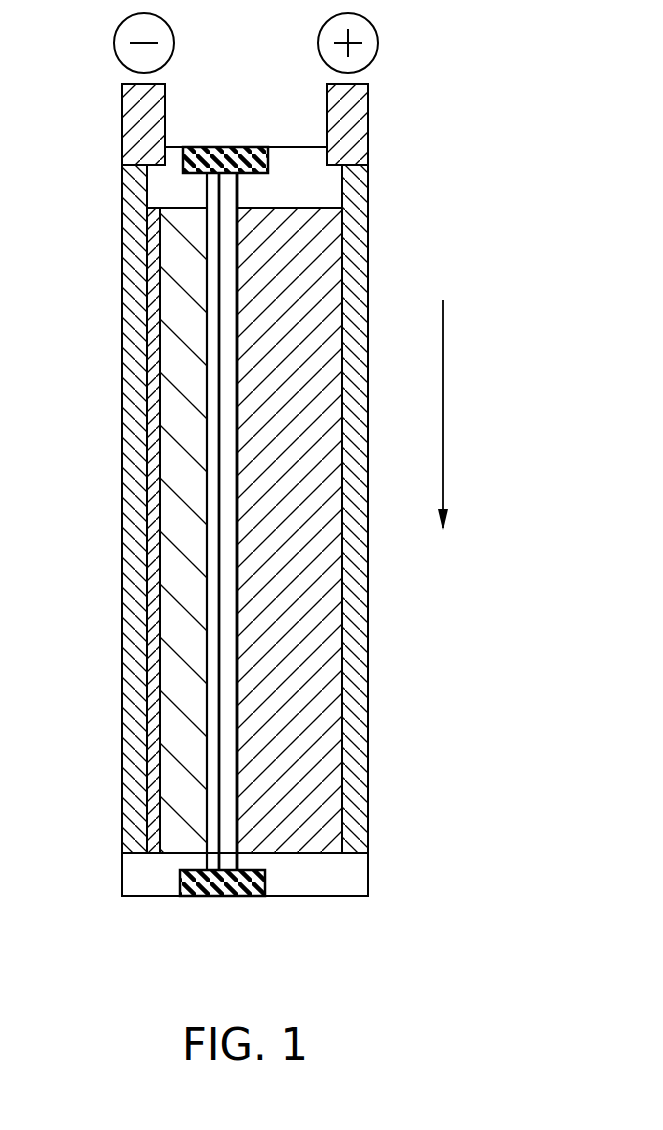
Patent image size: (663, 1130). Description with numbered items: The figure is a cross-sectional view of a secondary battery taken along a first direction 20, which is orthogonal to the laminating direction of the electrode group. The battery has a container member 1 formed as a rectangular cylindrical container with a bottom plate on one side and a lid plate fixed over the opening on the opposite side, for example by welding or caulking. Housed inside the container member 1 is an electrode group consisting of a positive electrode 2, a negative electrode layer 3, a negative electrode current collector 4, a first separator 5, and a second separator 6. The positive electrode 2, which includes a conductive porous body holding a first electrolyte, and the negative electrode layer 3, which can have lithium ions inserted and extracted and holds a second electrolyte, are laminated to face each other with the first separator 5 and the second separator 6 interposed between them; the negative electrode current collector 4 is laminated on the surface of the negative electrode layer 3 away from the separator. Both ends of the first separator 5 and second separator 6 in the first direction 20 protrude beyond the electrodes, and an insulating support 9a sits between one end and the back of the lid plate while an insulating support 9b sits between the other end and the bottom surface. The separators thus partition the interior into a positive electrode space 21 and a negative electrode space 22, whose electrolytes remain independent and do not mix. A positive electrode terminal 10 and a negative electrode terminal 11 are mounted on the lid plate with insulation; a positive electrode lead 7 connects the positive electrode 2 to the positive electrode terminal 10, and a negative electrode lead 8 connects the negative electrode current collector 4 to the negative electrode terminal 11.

The container member 1 is at (122, 873).
The positive electrode 2 is at (315, 425).
The negative electrode layer 3 is at (180, 562).
The negative electrode current collector 4 is at (152, 668).
The first separator 5 is at (230, 388).
The second separator 6 is at (213, 428).
The positive electrode lead 7 is at (360, 280).
The negative electrode lead 8 is at (130, 288).
The insulating support 9a is at (230, 156).
The insulating support 9b is at (229, 890).
The positive electrode terminal 10 is at (368, 120).
The negative electrode terminal 11 is at (122, 122).
The first direction 20 is at (457, 399).
The positive electrode space 21 is at (333, 186).
The negative electrode space 22 is at (155, 186).